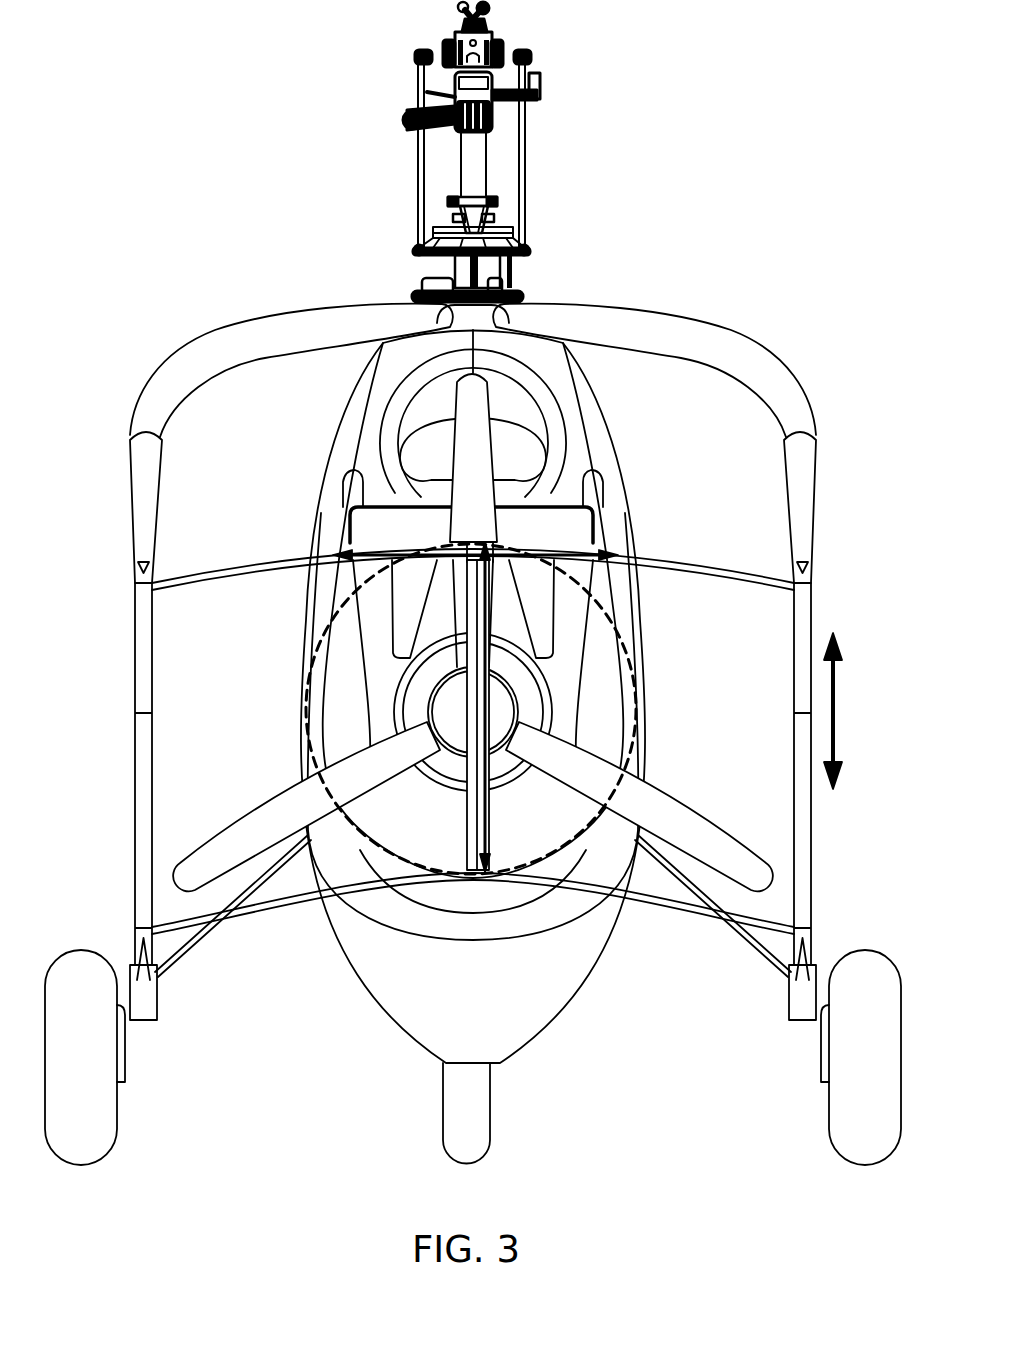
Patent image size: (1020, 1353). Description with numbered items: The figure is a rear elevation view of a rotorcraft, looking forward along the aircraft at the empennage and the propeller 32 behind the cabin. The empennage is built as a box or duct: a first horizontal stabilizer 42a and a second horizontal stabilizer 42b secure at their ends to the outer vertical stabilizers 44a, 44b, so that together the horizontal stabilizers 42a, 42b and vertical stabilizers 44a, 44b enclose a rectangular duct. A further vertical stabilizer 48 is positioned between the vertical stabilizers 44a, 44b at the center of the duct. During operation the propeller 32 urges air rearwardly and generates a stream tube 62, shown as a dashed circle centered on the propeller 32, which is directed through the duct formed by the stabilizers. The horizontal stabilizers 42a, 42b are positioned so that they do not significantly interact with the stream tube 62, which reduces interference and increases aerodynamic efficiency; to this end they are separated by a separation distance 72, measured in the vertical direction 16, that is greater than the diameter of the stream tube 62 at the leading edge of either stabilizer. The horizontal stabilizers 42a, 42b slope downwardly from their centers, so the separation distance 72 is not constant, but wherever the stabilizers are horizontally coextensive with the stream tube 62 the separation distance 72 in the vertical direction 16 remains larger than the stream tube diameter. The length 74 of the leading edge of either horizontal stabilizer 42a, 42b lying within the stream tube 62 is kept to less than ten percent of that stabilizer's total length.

The vertical direction 16 is at (837, 703).
The propeller 32 is at (237, 833).
The first horizontal stabilizer 42a is at (708, 576).
The second horizontal stabilizer 42b is at (682, 912).
The vertical stabilizer 44a is at (143, 678).
The vertical stabilizer 44b is at (807, 615).
The vertical stabilizer 48 is at (467, 808).
The stream tube 62 is at (325, 632).
The separation distance 72 is at (490, 690).
The length 74 is at (613, 548).